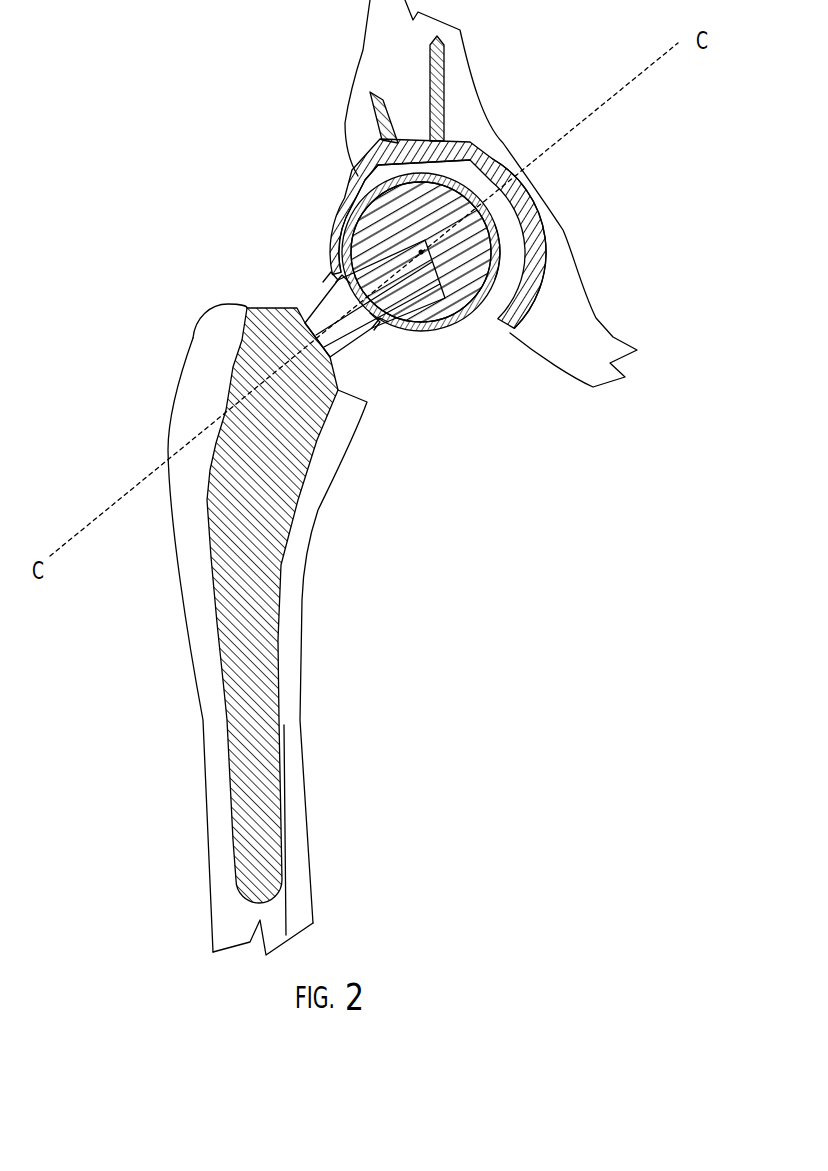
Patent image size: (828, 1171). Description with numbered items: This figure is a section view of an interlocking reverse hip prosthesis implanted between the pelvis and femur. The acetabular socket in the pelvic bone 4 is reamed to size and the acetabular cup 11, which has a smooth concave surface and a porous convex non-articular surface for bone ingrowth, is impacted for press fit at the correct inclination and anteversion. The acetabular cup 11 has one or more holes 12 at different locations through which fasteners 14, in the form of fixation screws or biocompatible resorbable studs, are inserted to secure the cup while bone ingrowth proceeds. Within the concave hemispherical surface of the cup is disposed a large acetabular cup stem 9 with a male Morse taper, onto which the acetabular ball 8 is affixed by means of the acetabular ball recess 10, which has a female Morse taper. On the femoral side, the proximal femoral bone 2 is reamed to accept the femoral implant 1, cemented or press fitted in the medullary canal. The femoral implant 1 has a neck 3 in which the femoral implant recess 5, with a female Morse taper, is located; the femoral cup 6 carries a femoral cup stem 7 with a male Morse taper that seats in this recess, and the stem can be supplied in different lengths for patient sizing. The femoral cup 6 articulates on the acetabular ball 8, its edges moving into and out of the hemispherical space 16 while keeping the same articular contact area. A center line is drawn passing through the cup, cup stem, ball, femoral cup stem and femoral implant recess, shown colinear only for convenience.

The femoral implant 1 is at (270, 640).
The proximal femoral bone 2 is at (185, 556).
The neck 3 is at (195, 338).
The pelvic bone 4 is at (382, 68).
The femoral implant recess 5 is at (350, 347).
The femoral cup 6 is at (408, 333).
The femoral cup stem 7 is at (312, 308).
The acetabular ball 8 is at (343, 220).
The acetabular cup stem 9 is at (527, 182).
The acetabular ball recess 10 is at (397, 277).
The acetabular cup 11 is at (548, 268).
The holes 12 is at (370, 138).
The fasteners 14 is at (443, 70).
The hemispherical space 16 is at (506, 295).